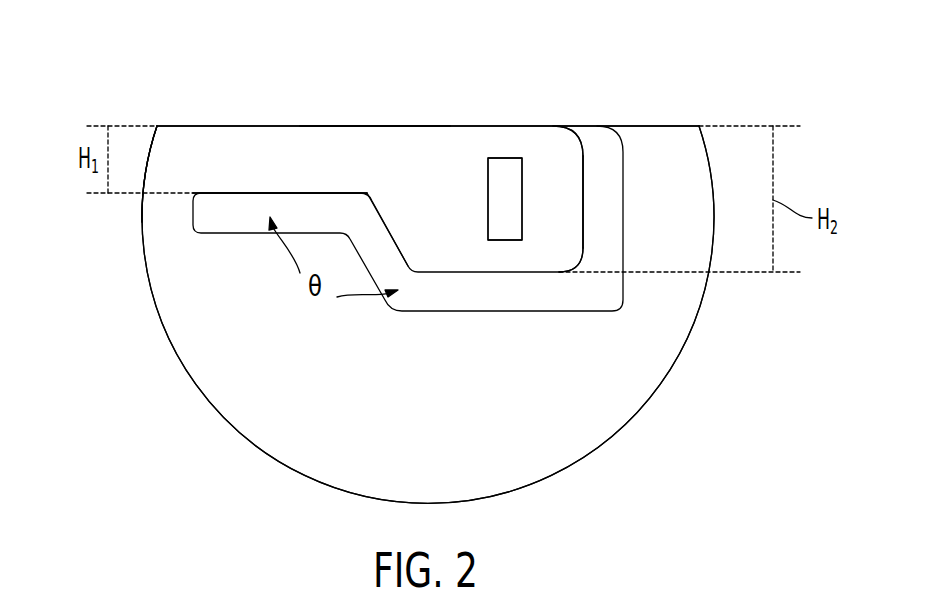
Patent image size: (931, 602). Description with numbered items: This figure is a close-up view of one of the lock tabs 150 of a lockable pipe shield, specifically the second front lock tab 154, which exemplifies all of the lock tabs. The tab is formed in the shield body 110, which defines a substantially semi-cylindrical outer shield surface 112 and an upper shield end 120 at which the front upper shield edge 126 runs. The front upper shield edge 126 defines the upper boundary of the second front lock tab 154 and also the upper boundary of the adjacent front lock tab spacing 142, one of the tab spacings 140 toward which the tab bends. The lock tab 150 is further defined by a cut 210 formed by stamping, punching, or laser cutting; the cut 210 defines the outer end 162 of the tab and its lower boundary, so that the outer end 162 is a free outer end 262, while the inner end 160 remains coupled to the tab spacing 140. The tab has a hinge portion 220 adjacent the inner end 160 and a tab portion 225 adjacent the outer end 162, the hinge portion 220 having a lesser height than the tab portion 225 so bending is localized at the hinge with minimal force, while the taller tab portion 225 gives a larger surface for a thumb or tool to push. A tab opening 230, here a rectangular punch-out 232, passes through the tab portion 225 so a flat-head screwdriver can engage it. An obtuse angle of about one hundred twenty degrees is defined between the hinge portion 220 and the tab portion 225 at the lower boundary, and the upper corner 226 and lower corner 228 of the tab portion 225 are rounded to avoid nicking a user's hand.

The shield body 110 is at (235, 387).
The outer shield surface 112 is at (293, 447).
The upper shield end 120 is at (333, 126).
The front upper shield edge 126 is at (333, 126).
The tab spacing 140 is at (155, 218).
The front lock tab spacing 142 is at (155, 218).
The lock tab 150 is at (372, 80).
The second front lock tab 154 is at (372, 80).
The inner end 160 is at (213, 148).
The outer end 162 is at (583, 197).
The cut 210 is at (506, 309).
The hinge portion 220 is at (275, 148).
The tab portion 225 is at (407, 150).
The upper corner 226 is at (581, 147).
The lower corner 228 is at (567, 271).
The tab opening 230 is at (511, 164).
The punch-out 232 is at (511, 164).
The free outer end 262 is at (583, 197).